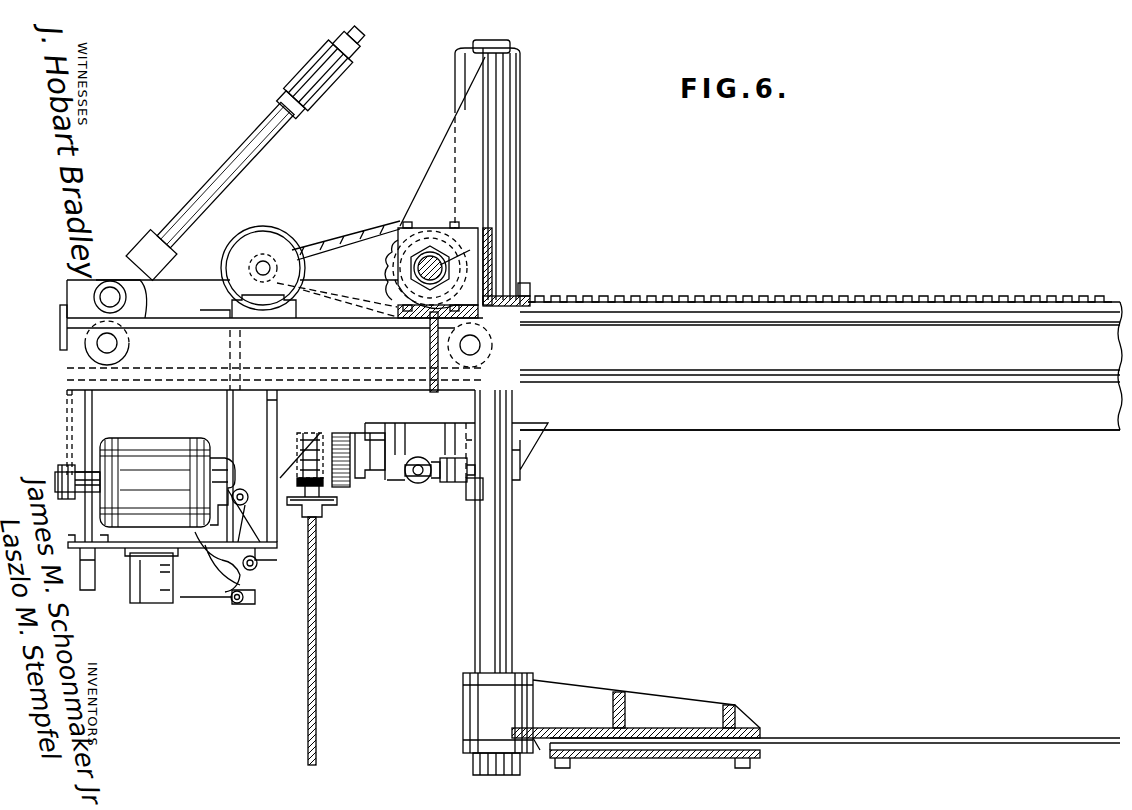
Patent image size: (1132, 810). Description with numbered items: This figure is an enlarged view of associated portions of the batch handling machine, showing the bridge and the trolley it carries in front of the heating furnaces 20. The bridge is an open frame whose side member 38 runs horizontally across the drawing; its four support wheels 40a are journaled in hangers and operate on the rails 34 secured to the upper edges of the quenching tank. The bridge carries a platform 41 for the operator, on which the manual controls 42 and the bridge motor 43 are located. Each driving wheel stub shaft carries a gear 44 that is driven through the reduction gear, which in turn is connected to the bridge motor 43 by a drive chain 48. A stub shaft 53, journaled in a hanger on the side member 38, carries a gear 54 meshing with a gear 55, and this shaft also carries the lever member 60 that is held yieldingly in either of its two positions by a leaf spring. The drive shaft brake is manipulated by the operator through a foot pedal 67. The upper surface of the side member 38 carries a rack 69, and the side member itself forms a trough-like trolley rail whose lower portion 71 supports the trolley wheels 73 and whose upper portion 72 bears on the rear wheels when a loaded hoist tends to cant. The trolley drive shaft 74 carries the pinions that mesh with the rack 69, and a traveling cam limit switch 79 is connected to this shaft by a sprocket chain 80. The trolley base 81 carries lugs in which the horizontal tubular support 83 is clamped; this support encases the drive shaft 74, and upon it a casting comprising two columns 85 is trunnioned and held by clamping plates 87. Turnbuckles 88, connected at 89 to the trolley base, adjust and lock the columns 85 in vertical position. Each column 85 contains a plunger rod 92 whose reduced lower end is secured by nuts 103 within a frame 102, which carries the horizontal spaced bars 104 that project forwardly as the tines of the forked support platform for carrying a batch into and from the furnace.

The heating furnaces 20 is at (316, 612).
The rails 34 is at (322, 490).
The bridge side member 38 is at (802, 425).
The support wheels 40a is at (310, 412).
The platform 41 is at (113, 575).
The manual controls 42 is at (230, 410).
The bridge motor 43 is at (156, 443).
The gear 44 is at (352, 480).
The drive chain 48 is at (67, 425).
The stub shaft 53 is at (419, 483).
The gear 54 is at (425, 483).
The gear 55 is at (440, 482).
The lever member 60 is at (483, 491).
The foot pedal 67 is at (162, 545).
The rack 69 is at (852, 294).
The lower portions of rails 71 is at (656, 370).
The upper portions of rails 72 is at (730, 294).
The trolley wheels 73 is at (75, 343).
The drive shaft 74 is at (448, 270).
The traveling cam limit switch 79 is at (258, 235).
The sprocket chain 80 is at (321, 240).
The trolley base 81 is at (368, 352).
The horizontal tubular support 83 is at (388, 250).
The columns 85 is at (520, 190).
The clamping plates 87 is at (431, 232).
The turnbuckles 88 is at (318, 110).
The lower connection of turnbuckle 89 is at (110, 288).
The plunger rod 92 is at (512, 594).
The frame 102 is at (684, 726).
The nuts 103 is at (468, 762).
The horizontal spaced bars 104 is at (946, 720).